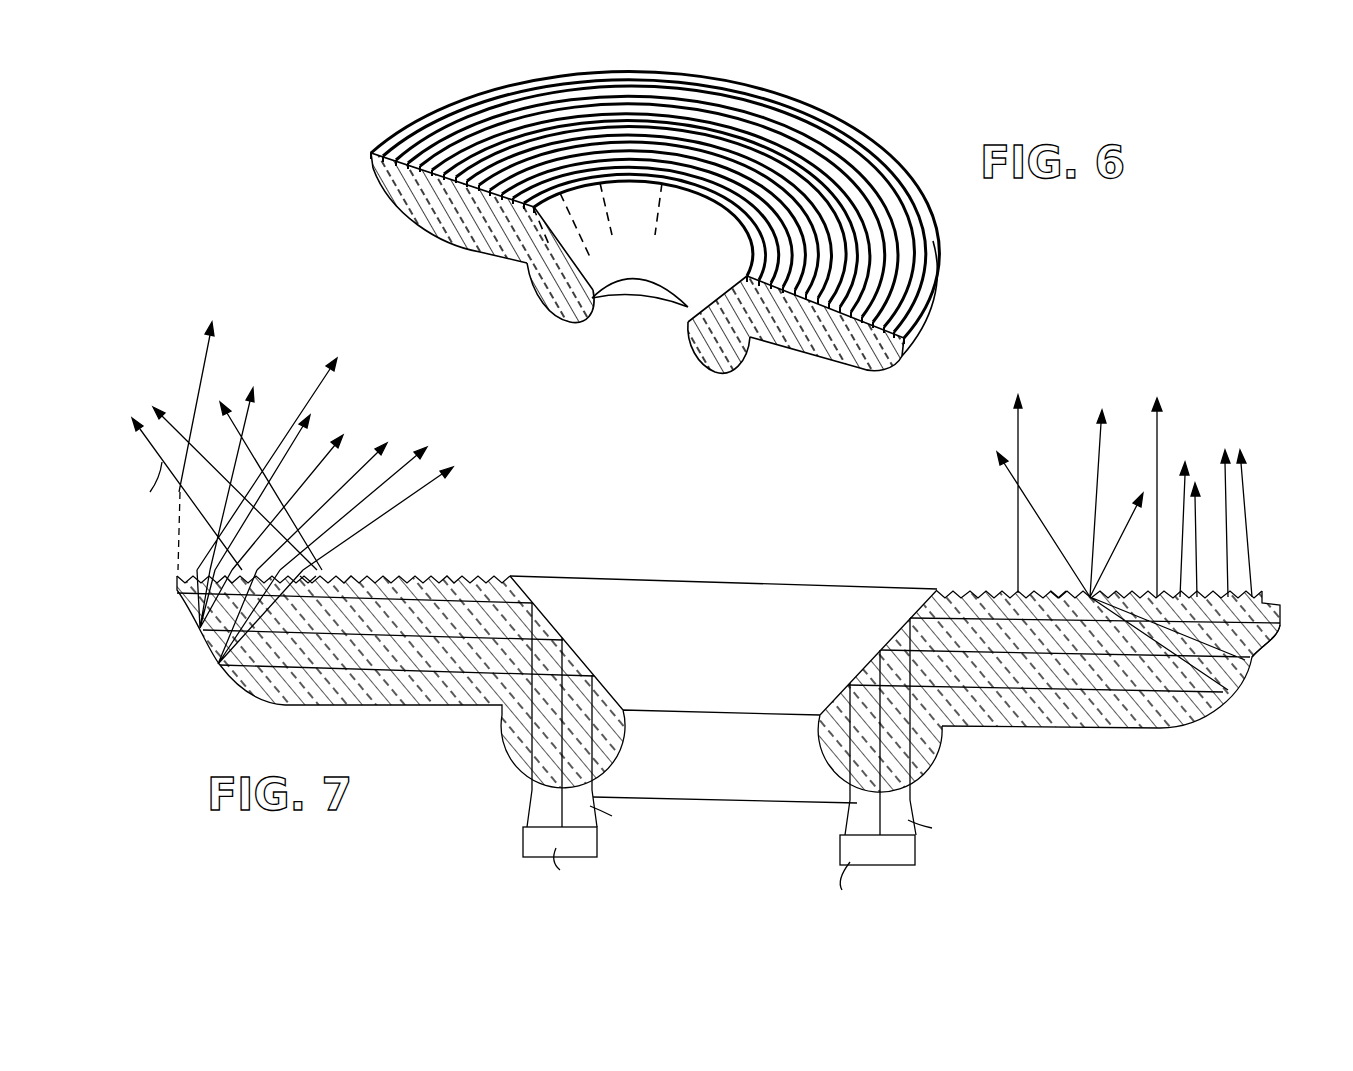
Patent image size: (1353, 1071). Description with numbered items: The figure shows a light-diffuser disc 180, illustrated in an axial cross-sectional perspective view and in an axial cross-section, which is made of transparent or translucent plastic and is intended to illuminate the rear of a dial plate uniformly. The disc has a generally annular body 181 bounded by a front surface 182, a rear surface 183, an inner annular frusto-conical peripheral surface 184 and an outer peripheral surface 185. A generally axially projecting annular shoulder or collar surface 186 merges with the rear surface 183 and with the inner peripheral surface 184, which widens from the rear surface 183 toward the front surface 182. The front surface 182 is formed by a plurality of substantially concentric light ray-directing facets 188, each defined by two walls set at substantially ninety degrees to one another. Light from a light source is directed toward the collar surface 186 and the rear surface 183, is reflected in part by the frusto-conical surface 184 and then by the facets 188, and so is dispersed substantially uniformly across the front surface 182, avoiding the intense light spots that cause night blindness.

In FIG. 6, the light-diffuser disc 180 is at (820, 72).
In FIG. 7, the light-diffuser disc 180 is at (738, 505).
In FIG. 6, the annular body 181 is at (948, 258).
In FIG. 7, the annular body 181 is at (1262, 667).
In FIG. 6, the front surface 182 is at (855, 153).
In FIG. 7, the front surface 182 is at (425, 572).
In FIG. 6, the rear surface 183 is at (790, 358).
In FIG. 7, the rear surface 183 is at (372, 712).
In FIG. 6, the inner annular frusto-conical peripheral surface 184 is at (661, 258).
In FIG. 7, the inner annular frusto-conical peripheral surface 184 is at (725, 649).
In FIG. 6, the outer peripheral surface 185 is at (374, 168).
In FIG. 7, the outer peripheral surface 185 is at (1232, 680).
In FIG. 6, the collar surface 186 is at (562, 331).
In FIG. 7, the collar surface 186 is at (705, 755).
In FIG. 7, the facets 188 is at (355, 575).